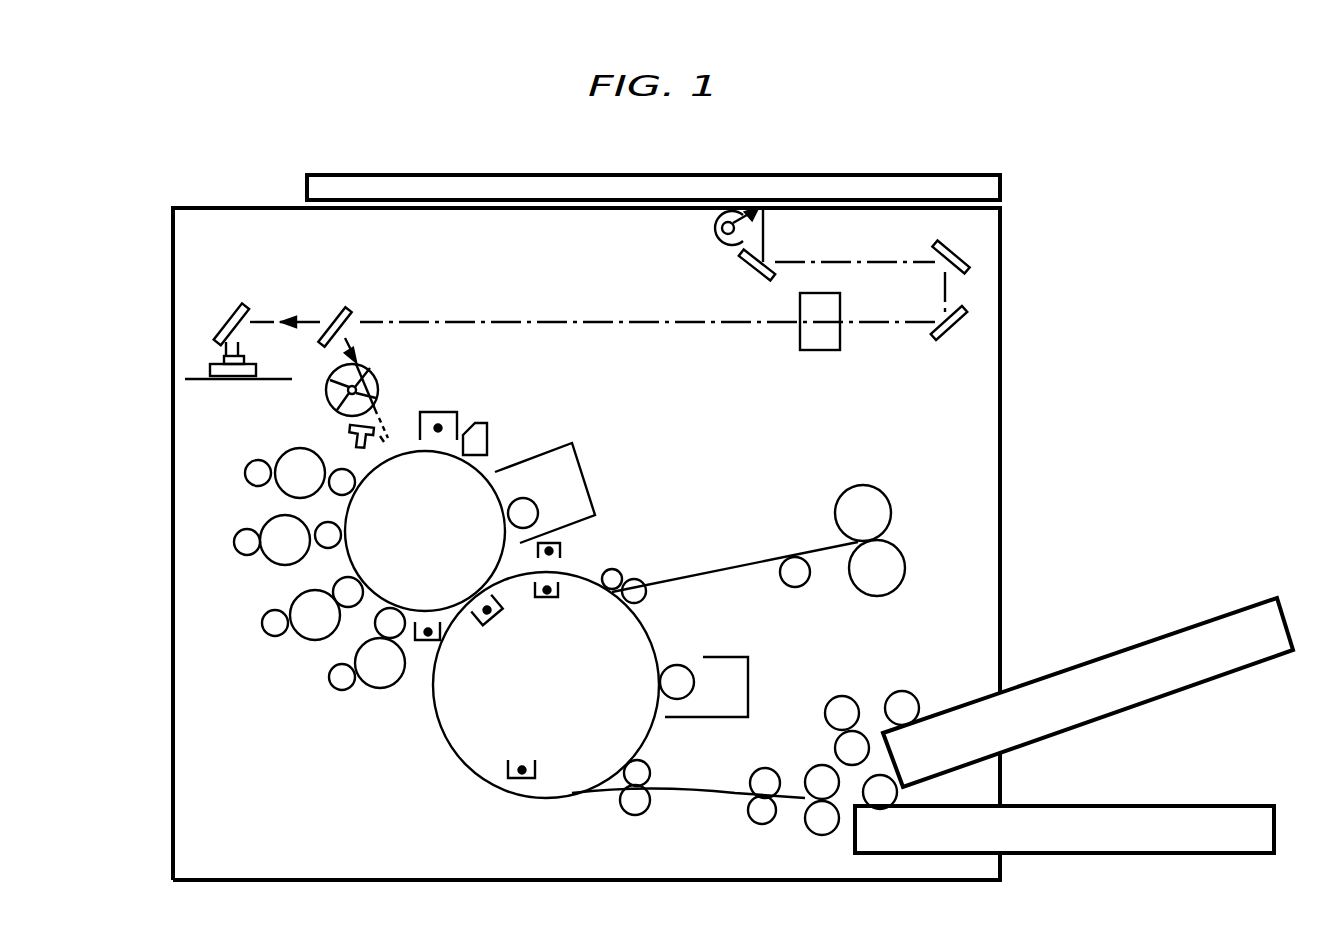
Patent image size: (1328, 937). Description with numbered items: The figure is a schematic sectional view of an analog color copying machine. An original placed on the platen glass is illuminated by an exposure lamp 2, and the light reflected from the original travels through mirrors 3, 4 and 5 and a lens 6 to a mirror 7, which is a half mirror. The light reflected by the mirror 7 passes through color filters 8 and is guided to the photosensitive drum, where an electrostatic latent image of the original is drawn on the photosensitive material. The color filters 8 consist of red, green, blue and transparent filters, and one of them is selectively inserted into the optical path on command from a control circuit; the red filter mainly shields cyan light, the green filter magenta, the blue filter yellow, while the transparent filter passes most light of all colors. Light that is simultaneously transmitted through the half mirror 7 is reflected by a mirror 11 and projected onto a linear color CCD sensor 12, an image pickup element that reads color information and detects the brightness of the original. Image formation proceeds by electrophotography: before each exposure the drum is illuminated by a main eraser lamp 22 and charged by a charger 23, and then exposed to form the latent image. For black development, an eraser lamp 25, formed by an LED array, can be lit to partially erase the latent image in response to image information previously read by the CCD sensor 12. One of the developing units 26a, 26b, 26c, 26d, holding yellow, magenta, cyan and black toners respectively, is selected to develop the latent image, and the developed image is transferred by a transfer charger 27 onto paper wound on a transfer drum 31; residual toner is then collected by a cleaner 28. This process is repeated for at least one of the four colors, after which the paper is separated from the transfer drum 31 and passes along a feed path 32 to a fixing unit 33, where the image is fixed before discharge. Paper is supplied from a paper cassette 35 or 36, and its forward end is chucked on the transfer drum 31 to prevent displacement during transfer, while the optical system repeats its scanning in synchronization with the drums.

The exposure lamp 2 is at (720, 238).
The mirror 3 is at (752, 272).
The mirror 4 is at (965, 255).
The mirror 5 is at (955, 330).
The lens 6 is at (840, 338).
The mirror 7 is at (325, 318).
The color filters 8 is at (326, 398).
The mirror 11 is at (225, 315).
The linear color CCD sensor 12 is at (226, 356).
The main eraser lamp 22 is at (488, 433).
The charger 23 is at (438, 412).
The eraser lamp 25 is at (350, 430).
The developing unit 26a is at (255, 484).
The developing unit 26b is at (272, 562).
The developing unit 26c is at (293, 640).
The developing unit 26d is at (362, 688).
The transfer charger 27 is at (497, 618).
The cleaner 28 is at (596, 495).
The transfer drum 31 is at (470, 770).
The feed path 32 is at (764, 560).
The fixing unit 33 is at (891, 500).
The paper cassette 35 is at (1150, 806).
The paper cassette 36 is at (1112, 655).